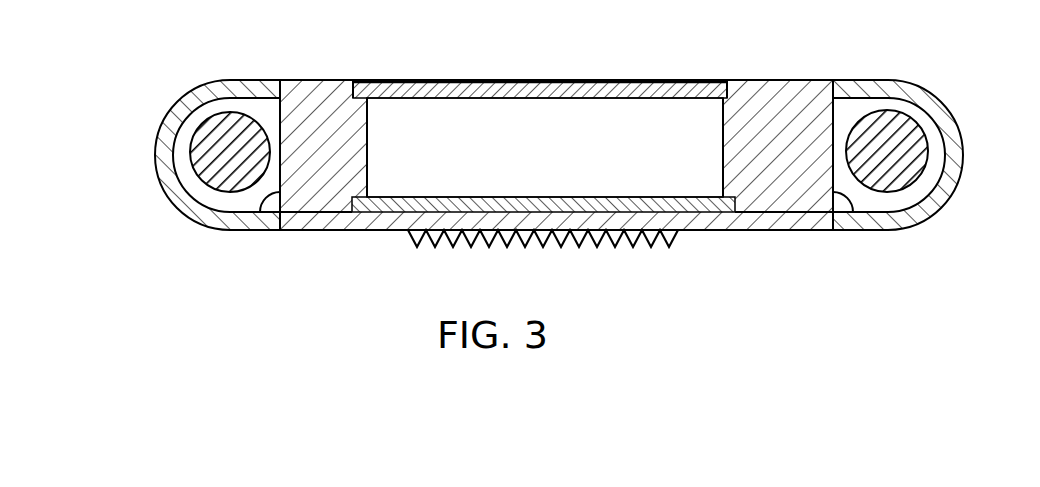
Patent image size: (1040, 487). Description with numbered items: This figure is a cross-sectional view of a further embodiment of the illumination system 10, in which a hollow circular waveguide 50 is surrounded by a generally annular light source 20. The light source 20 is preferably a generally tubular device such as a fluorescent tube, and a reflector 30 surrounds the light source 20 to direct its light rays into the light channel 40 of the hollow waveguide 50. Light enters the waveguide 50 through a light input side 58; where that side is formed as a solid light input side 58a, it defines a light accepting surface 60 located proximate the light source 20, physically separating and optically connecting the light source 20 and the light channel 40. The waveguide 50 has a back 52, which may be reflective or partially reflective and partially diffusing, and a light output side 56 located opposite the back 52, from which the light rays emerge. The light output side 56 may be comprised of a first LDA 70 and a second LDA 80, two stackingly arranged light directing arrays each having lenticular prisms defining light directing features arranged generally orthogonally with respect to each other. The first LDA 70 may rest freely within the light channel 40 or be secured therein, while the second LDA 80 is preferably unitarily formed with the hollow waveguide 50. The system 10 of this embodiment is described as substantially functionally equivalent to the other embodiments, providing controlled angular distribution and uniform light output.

The illumination system 10 is at (141, 75).
The light source 20 is at (218, 190).
The reflector 30 is at (161, 186).
The light channel 40 is at (538, 153).
The hollow waveguide 50 is at (808, 73).
The back 52 is at (587, 80).
The light output side 56 is at (451, 237).
The light input side 58 is at (758, 197).
The solid light input side 58a is at (340, 120).
The light accepting surface 60 is at (261, 213).
The first LDA 70 is at (417, 203).
The second LDA 80 is at (533, 238).